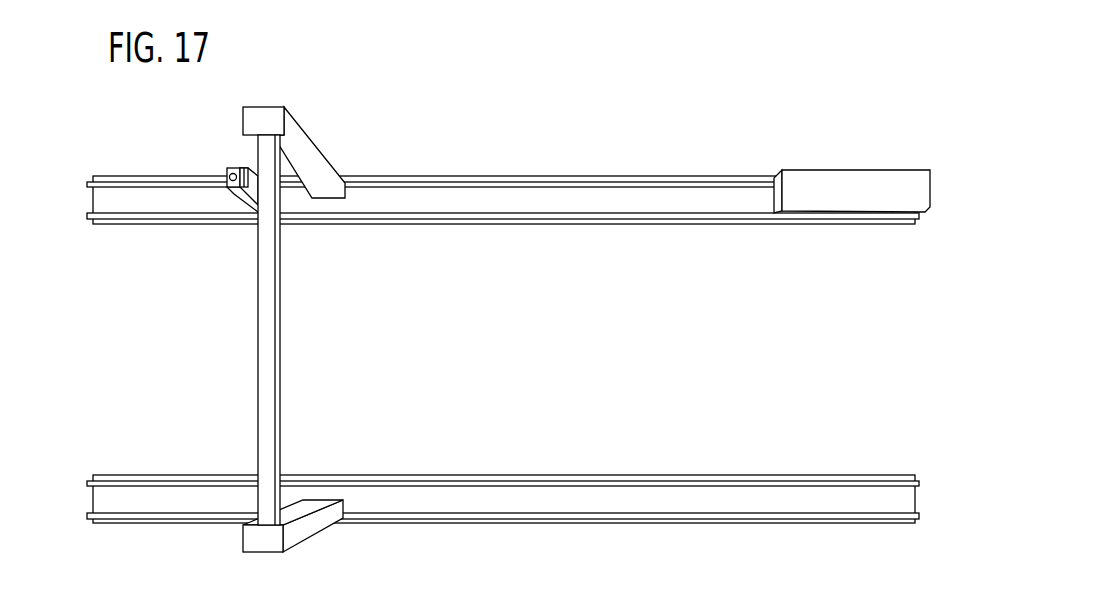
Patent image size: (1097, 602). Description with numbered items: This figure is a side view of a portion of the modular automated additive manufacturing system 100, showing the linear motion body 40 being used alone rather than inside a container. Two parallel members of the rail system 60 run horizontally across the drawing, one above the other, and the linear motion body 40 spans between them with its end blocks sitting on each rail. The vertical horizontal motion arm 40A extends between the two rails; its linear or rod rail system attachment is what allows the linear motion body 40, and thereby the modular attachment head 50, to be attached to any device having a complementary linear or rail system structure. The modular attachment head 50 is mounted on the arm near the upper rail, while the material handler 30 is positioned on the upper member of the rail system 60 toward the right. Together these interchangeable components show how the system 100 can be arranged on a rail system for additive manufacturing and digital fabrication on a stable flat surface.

The modular automated additive manufacturing system 100 is at (717, 105).
The rail system 60 is at (572, 193).
The linear motion body 40 is at (307, 147).
The horizontal motion arm 40A is at (273, 357).
The modular attachment head 50 is at (250, 200).
The material handler 30 is at (830, 185).